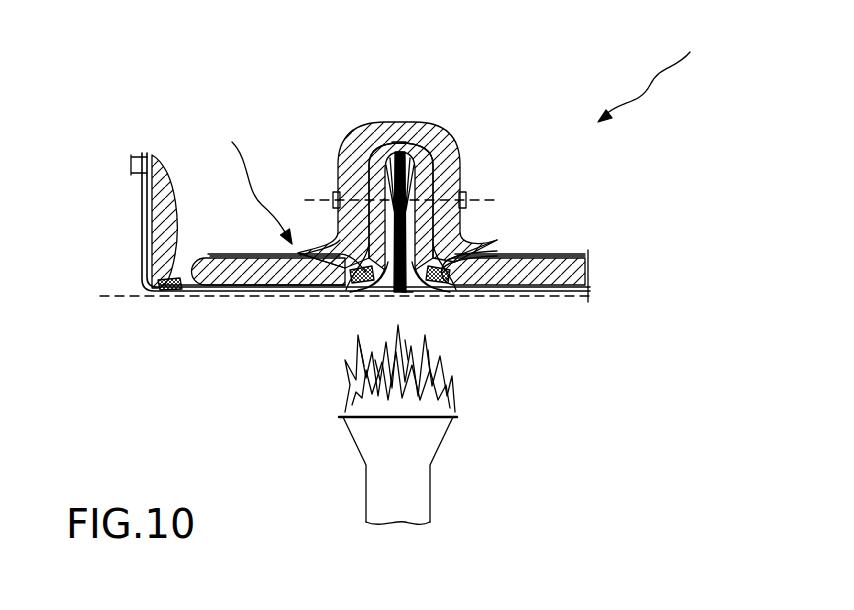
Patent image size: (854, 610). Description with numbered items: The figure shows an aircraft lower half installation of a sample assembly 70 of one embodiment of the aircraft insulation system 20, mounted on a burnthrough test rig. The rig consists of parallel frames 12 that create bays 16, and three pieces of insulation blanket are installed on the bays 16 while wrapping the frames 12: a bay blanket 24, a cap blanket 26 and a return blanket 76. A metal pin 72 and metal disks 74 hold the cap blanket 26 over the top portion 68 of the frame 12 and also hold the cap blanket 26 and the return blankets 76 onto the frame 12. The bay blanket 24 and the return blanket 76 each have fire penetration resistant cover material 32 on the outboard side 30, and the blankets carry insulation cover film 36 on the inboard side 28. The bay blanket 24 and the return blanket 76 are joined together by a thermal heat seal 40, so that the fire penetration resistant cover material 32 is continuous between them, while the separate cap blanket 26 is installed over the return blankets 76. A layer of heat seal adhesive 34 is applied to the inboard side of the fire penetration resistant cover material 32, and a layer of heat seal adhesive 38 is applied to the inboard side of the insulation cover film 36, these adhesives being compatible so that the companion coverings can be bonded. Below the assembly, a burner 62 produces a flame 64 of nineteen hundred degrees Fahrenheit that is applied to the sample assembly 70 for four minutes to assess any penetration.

The frame 12 is at (143, 246).
The bay 16 is at (153, 297).
The aircraft insulation system 20 is at (251, 181).
The bay blanket 24 is at (211, 268).
The cap blanket 26 is at (445, 138).
The inboard side 28 is at (272, 268).
The outboard side 30 is at (208, 292).
The fire penetration resistant cover material 32 is at (143, 211).
The heat seal adhesive 34 is at (174, 292).
The insulation cover film 36 is at (248, 258).
The heat seal adhesive 38 is at (478, 252).
The thermal heat seal 40 is at (362, 292).
The burner 62 is at (386, 487).
The flame 64 is at (342, 416).
The top portion 68 is at (398, 142).
The sample assembly 70 is at (644, 78).
The metal pin 72 is at (306, 200).
The metal disks 74 is at (337, 192).
The return blanket 76 is at (472, 236).